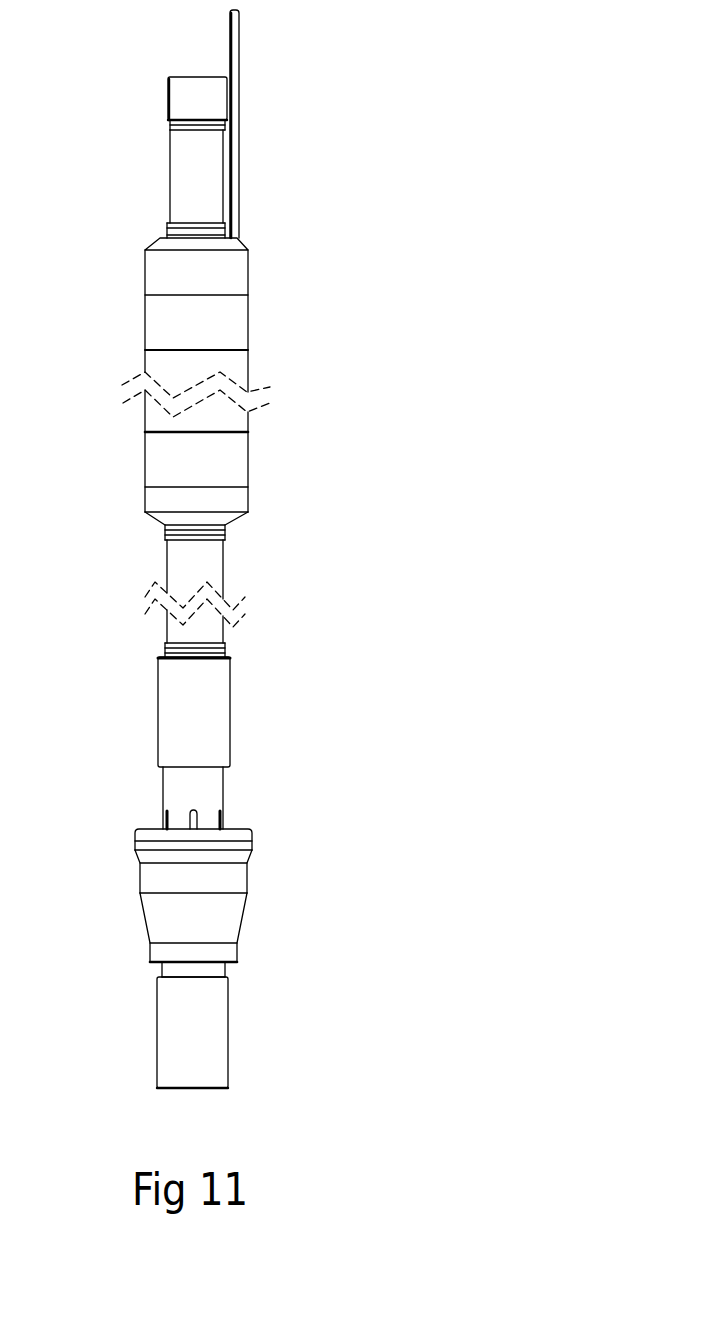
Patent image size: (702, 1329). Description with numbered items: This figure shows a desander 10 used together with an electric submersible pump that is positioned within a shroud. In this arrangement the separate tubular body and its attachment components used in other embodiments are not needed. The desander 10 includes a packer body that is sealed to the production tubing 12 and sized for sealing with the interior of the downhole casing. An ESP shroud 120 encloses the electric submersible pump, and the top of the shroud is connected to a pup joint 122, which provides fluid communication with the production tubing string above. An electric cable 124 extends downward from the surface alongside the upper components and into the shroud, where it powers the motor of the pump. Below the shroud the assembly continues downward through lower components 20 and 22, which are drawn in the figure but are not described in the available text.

The desander 10 is at (350, 750).
The production tubing 12 is at (210, 562).
The connector housing 20 is at (225, 904).
The end fitting 22 is at (212, 1030).
The ESP shroud 120 is at (223, 453).
The pup joint 122 is at (197, 170).
The electric cable 124 is at (241, 45).